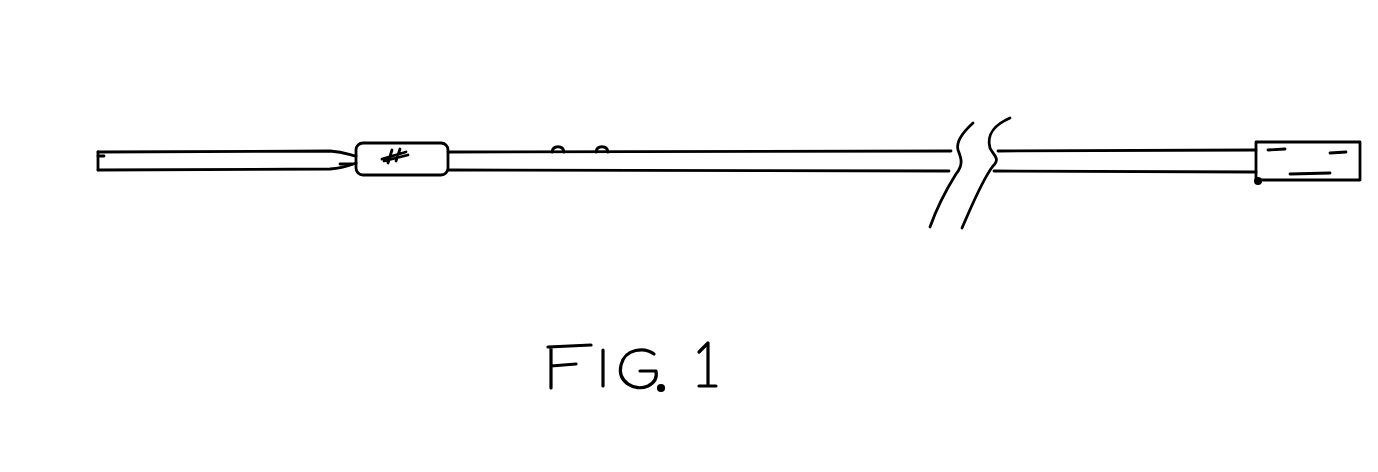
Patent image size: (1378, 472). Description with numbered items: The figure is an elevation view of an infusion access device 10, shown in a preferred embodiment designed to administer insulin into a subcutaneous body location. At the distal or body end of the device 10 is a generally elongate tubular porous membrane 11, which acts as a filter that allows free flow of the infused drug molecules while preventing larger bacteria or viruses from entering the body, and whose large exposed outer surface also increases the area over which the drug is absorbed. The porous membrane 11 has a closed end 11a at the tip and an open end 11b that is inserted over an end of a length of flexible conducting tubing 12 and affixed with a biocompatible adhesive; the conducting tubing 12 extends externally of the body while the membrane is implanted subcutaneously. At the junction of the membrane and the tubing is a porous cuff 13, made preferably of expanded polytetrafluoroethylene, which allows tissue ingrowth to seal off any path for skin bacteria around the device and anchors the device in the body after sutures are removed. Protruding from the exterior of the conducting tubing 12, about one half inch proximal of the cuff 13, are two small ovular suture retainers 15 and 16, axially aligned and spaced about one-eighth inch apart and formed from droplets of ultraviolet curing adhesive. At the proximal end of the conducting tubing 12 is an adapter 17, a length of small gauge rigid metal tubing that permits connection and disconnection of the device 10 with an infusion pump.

The infusion access device 10 is at (760, 98).
The porous membrane 11 is at (213, 160).
The closed end 11a is at (96, 166).
The open end 11b is at (350, 172).
The conducting tubing 12 is at (747, 168).
The porous cuff 13 is at (422, 150).
The suture retainer 15 is at (558, 149).
The suture retainer 16 is at (601, 149).
The adapter 17 is at (1307, 150).